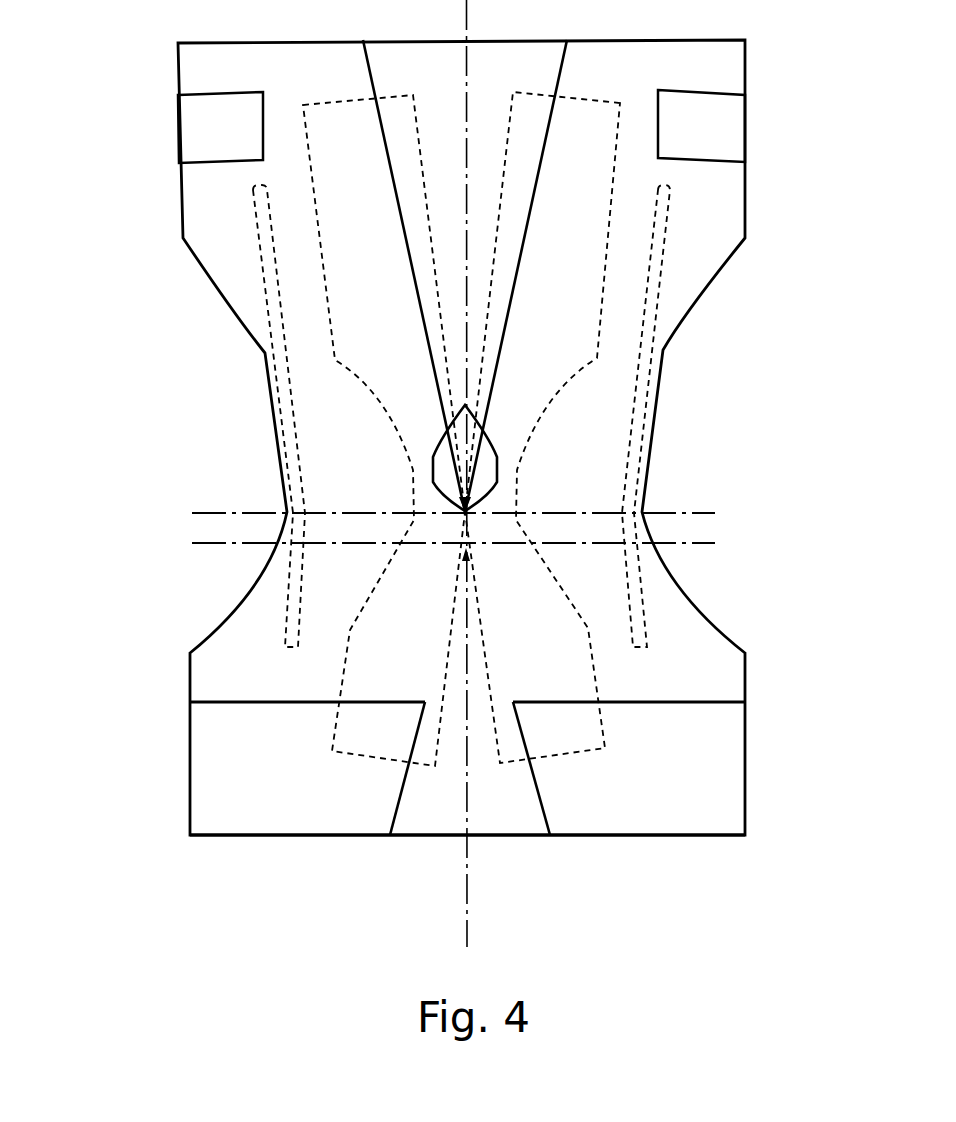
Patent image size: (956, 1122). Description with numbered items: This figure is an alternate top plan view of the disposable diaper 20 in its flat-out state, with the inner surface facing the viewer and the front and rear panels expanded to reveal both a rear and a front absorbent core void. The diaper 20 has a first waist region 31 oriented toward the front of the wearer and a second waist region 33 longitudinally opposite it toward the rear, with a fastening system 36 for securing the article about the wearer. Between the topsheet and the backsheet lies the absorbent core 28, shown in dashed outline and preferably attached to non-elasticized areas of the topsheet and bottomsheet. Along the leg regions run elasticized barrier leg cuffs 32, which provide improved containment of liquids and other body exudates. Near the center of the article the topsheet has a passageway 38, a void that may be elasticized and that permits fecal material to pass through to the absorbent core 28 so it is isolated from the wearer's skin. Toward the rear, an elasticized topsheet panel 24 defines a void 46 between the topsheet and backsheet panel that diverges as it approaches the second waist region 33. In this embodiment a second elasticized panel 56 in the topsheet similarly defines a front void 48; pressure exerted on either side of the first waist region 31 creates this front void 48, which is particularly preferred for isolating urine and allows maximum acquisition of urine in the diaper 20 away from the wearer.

The diaper 20 is at (150, 341).
The elasticized topsheet panel 24 is at (562, 63).
The absorbent core 28 is at (570, 322).
The first waist region 31 is at (190, 812).
The elasticized barrier leg cuffs 32 is at (273, 362).
The second waist region 33 is at (178, 70).
The fastening system 36 is at (745, 92).
The passageway 38 is at (433, 468).
The void 46 is at (487, 219).
The front void 48 is at (493, 716).
The second elasticized panel 56 is at (543, 810).